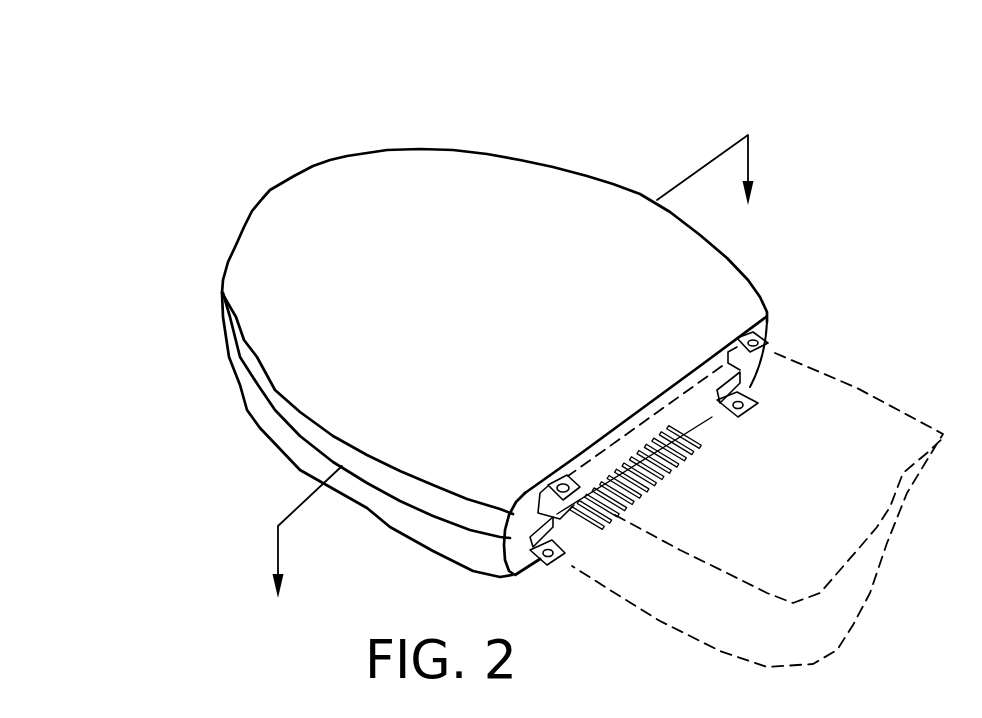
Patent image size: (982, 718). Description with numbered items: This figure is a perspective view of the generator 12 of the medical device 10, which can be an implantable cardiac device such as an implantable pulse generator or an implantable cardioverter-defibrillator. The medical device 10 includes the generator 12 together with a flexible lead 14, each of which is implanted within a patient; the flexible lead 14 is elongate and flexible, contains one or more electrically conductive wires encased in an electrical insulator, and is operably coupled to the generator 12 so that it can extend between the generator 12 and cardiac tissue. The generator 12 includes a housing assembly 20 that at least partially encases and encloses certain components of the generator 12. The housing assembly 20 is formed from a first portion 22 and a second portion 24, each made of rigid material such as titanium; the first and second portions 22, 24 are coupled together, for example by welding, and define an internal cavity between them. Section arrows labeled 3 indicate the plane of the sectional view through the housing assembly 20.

The medical device 10 is at (146, 88).
The generator 12 is at (277, 301).
The flexible lead 14 is at (858, 388).
The housing assembly 20 is at (391, 133).
The first portion 22 is at (268, 385).
The second portion 24 is at (291, 448).
The section line 3- 3 is at (511, 366).